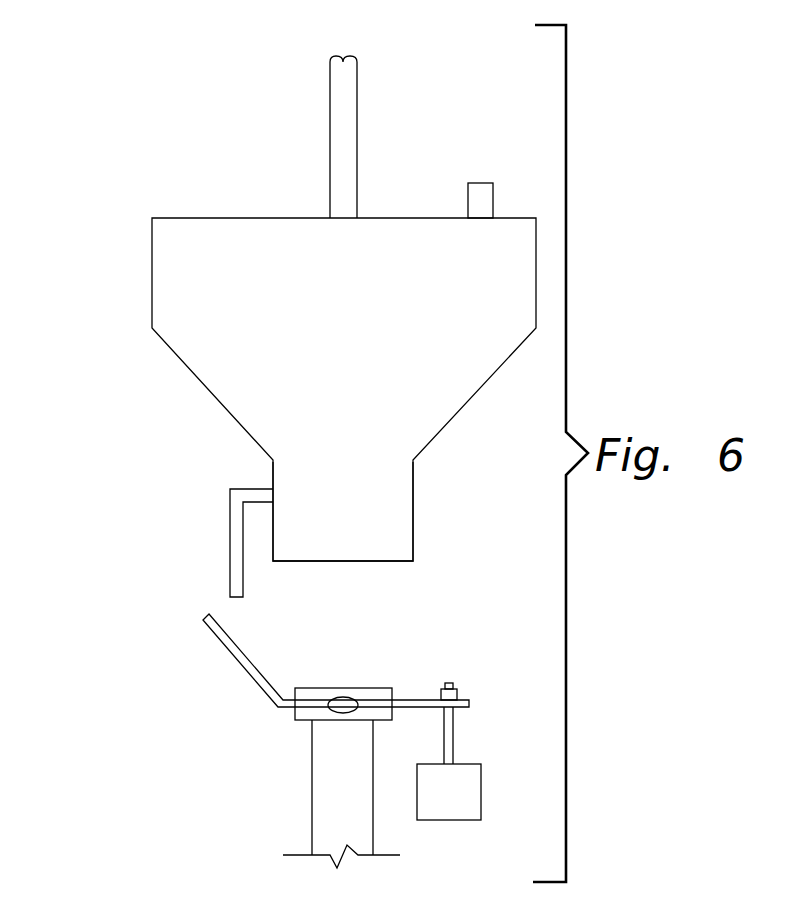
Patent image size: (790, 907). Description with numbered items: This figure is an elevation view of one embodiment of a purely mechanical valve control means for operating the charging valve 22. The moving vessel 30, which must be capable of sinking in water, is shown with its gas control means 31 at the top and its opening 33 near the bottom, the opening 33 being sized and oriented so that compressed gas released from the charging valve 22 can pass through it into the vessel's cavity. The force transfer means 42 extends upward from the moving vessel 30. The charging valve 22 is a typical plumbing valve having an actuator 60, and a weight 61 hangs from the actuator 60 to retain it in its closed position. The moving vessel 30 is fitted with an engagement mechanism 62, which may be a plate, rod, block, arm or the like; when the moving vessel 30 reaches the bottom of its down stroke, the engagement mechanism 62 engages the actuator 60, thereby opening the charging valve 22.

The charging valve 22 is at (340, 688).
The moving vessel 30 is at (152, 268).
The gas control means 31 is at (488, 183).
The opening 33 is at (380, 563).
The force transfer means 42 is at (330, 138).
The actuator 60 is at (258, 690).
The weight 61 is at (481, 792).
The engagement mechanism 62 is at (230, 545).